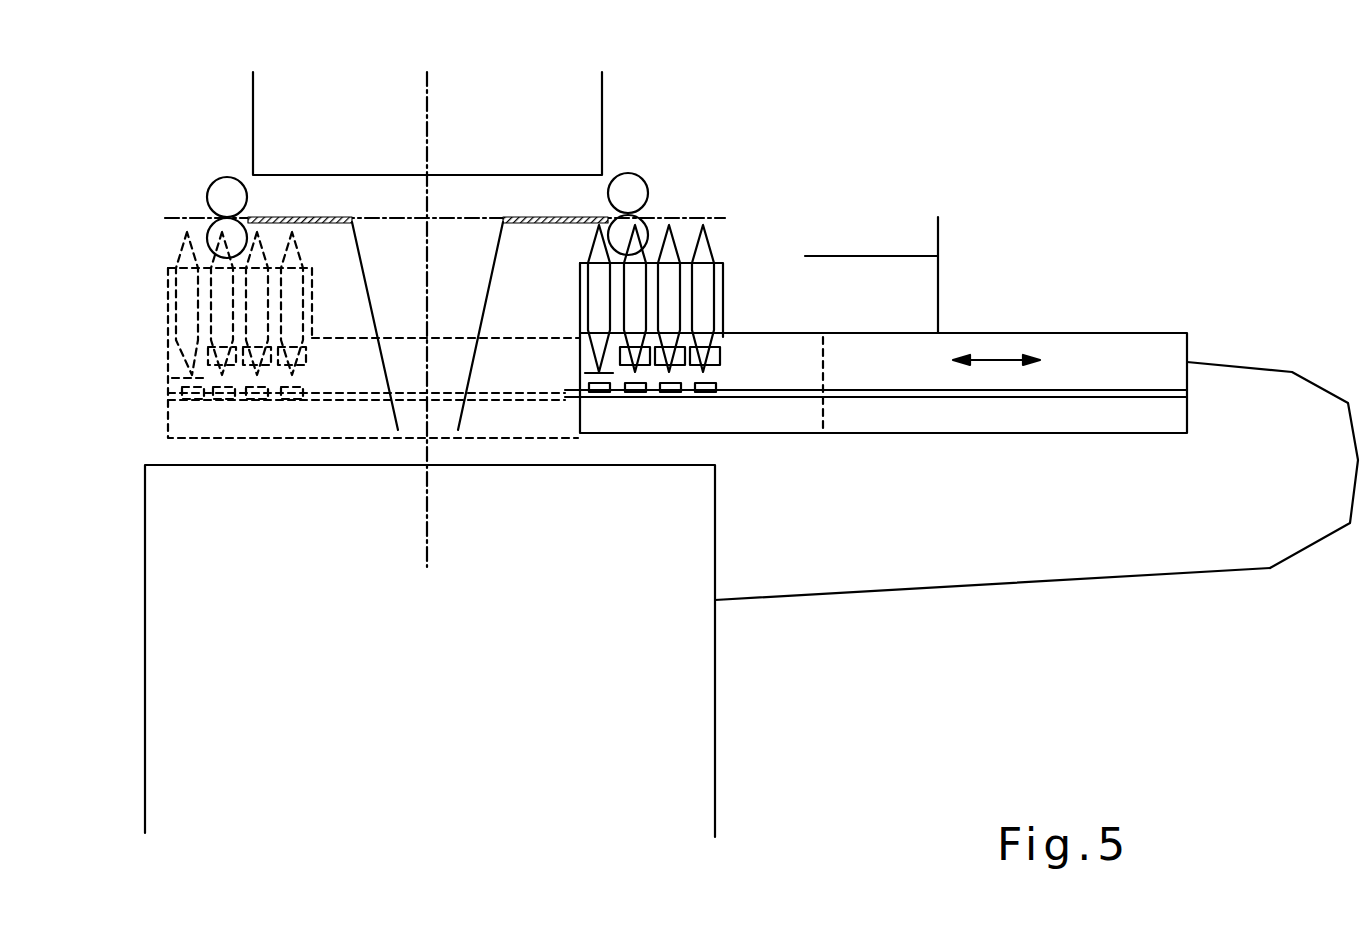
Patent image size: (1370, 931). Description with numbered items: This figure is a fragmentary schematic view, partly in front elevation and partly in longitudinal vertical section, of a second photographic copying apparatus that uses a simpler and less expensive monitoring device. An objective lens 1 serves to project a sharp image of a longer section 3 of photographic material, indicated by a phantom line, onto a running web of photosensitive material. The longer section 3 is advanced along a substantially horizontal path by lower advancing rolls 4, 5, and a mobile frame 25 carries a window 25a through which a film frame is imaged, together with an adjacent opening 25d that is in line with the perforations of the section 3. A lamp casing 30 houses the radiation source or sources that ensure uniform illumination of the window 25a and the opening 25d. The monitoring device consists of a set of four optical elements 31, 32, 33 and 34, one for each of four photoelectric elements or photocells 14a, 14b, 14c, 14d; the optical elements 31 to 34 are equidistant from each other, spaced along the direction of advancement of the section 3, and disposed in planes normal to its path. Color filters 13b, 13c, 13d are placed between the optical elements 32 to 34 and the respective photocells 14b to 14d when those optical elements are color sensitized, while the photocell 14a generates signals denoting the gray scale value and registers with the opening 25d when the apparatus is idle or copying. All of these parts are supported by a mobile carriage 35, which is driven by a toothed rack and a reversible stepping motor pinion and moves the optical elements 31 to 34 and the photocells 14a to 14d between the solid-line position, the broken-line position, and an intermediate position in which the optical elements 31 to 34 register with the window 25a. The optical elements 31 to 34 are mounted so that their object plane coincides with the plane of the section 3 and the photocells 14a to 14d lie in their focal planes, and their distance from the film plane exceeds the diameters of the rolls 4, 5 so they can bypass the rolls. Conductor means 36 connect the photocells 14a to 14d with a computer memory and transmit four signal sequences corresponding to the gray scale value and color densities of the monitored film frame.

The objective lens 1 is at (715, 697).
The longer section 3 is at (462, 220).
The lower advancing roll 4 is at (215, 183).
The lower advancing roll 5 is at (642, 180).
The mobile frame 25 is at (312, 218).
The window 25a is at (385, 220).
The opening 25d is at (532, 220).
The lamp casing 30 is at (602, 96).
The optical element 31 is at (597, 282).
The optical element 32 is at (634, 300).
The optical element 33 is at (673, 290).
The optical element 34 is at (705, 304).
The mobile carriage 35 is at (1065, 333).
The conductor means 36 is at (1273, 372).
The color filter 13b is at (622, 356).
The color filter 13c is at (700, 343).
The color filter 13d is at (722, 357).
The photocell 14a is at (598, 393).
The photocell 14b is at (637, 393).
The photocell 14c is at (672, 393).
The photocell 14d is at (706, 393).